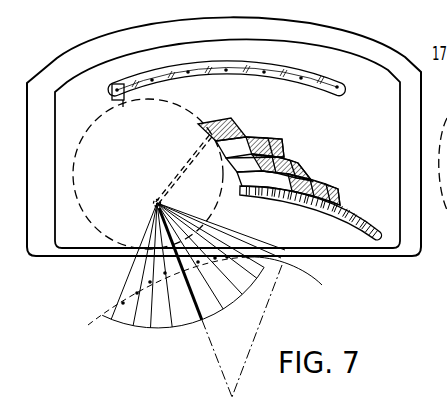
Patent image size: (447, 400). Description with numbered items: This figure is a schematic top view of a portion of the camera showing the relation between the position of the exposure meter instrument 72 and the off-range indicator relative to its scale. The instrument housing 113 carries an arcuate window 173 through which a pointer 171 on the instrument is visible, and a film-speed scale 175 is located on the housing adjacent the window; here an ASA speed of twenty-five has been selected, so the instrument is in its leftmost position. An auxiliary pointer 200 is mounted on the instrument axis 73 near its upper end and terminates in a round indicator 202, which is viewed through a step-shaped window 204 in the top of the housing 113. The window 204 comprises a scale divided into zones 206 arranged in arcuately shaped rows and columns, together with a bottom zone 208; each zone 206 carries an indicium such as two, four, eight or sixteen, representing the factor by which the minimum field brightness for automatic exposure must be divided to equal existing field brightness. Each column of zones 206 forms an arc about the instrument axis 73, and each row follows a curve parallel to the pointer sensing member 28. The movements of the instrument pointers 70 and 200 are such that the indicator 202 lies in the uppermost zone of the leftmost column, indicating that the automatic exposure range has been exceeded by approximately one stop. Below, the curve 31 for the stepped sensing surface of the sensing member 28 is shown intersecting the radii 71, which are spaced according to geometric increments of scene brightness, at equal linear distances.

The instrument housing 113 is at (62, 60).
The film-speed scale 175 is at (347, 62).
The arcuate window 173 is at (126, 82).
The pointer 171 is at (112, 92).
The exposure meter instrument 72 is at (94, 130).
The instrument axis 73 is at (147, 202).
The auxiliary pointer 200 is at (184, 164).
The round indicator 202 is at (218, 121).
The window 204 is at (266, 131).
The zones 206 is at (294, 164).
The bottom zone 208 is at (363, 219).
The radii 71 is at (170, 319).
The pointer 70 is at (196, 320).
The curve 31 is at (88, 325).
The pointer sensing member 28 is at (306, 273).